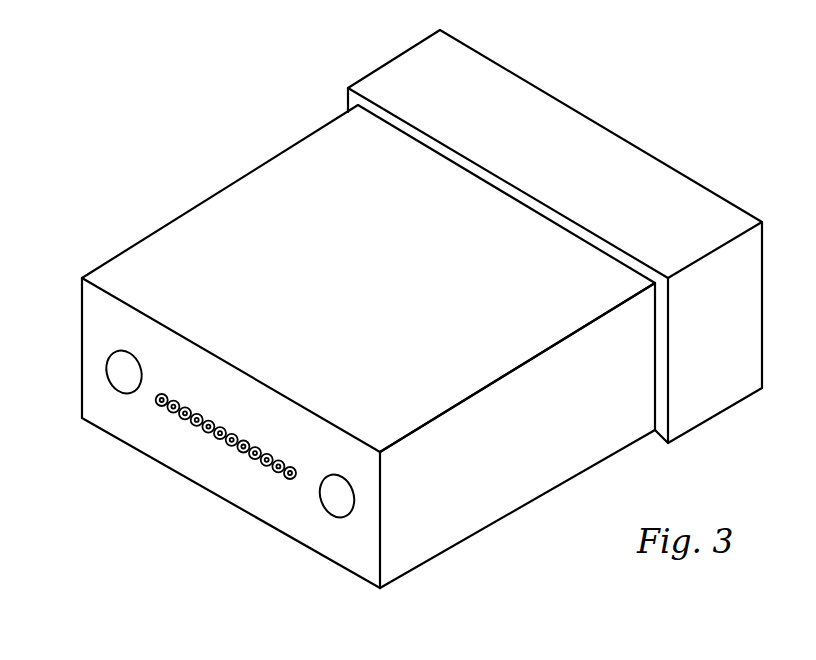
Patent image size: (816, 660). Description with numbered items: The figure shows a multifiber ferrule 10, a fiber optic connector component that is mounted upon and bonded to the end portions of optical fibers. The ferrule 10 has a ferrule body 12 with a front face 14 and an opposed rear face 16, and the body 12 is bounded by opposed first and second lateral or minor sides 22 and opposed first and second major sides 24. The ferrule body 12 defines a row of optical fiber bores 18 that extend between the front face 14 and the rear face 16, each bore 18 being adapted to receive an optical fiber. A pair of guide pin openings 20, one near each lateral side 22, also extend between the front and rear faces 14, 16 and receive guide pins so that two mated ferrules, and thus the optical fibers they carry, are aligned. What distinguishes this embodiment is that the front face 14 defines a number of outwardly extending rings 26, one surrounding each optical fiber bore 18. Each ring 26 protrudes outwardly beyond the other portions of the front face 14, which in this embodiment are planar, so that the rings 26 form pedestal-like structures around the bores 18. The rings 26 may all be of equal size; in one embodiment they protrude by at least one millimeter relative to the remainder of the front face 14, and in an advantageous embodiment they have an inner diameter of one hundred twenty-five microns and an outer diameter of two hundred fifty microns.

The ferrule 10 is at (688, 120).
The ferrule body 12 is at (255, 187).
The front face 14 is at (95, 320).
The rear face 16 is at (577, 108).
The optical fiber bore 18 is at (287, 481).
The guide pin opening 20 is at (337, 503).
The lateral or minor side 22 is at (80, 385).
The major side 24 is at (200, 487).
The ring 26 is at (278, 477).